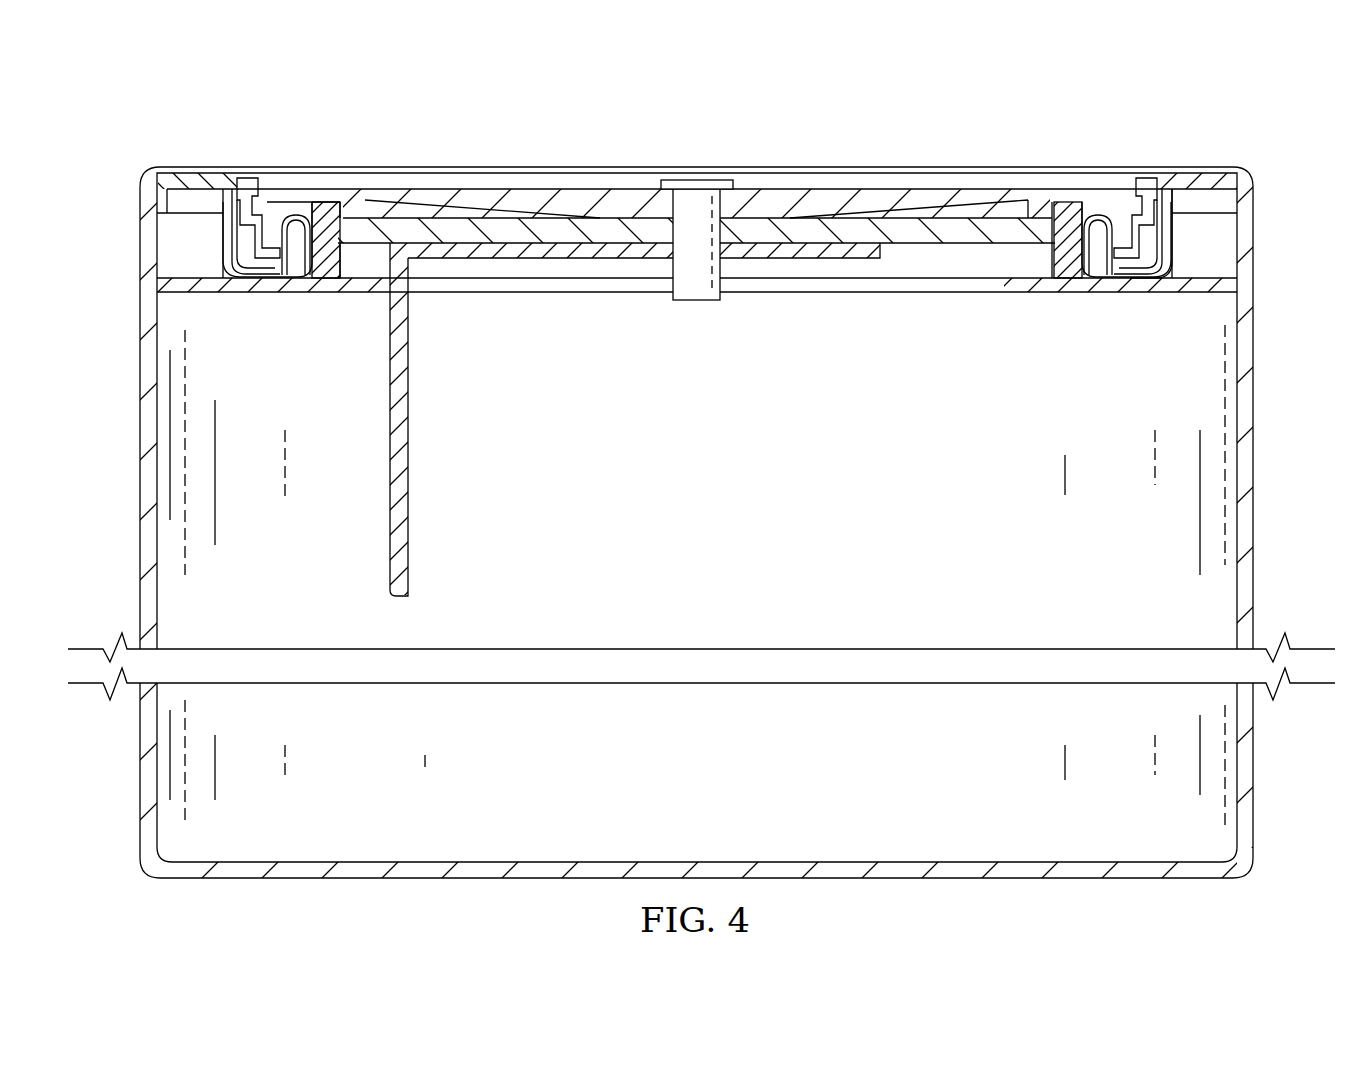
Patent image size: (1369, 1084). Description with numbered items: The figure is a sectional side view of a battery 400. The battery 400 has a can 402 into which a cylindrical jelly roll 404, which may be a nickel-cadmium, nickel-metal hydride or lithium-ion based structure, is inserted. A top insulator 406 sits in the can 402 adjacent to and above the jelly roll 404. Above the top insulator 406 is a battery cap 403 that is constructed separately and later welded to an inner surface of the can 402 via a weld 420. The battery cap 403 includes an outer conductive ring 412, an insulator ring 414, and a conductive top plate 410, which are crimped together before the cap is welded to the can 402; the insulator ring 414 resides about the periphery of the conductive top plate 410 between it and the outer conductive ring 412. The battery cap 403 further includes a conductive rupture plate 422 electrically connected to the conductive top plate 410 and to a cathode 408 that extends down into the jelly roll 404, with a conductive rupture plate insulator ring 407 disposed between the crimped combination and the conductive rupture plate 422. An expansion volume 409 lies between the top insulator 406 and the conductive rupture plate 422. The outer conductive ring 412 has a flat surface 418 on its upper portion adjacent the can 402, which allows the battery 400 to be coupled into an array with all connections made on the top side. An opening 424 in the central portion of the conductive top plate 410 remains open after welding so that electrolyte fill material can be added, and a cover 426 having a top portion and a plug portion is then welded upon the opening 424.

The battery 400 is at (1247, 913).
The can 402 is at (1255, 810).
The battery cap 403 is at (567, 103).
The jelly roll 404 is at (722, 775).
The top insulator 406 is at (832, 280).
The conductive rupture plate insulator ring 407 is at (322, 262).
The cathode 408 is at (390, 515).
The expansion volume 409 is at (352, 248).
The conductive top plate 410 is at (833, 189).
The outer conductive ring 412 is at (1175, 189).
The insulator ring 414 is at (242, 185).
The flat surface 418 is at (1225, 172).
The weld 420 is at (160, 170).
The conductive rupture plate 422 is at (950, 232).
The opening 424 is at (690, 290).
The cover 426 is at (706, 180).